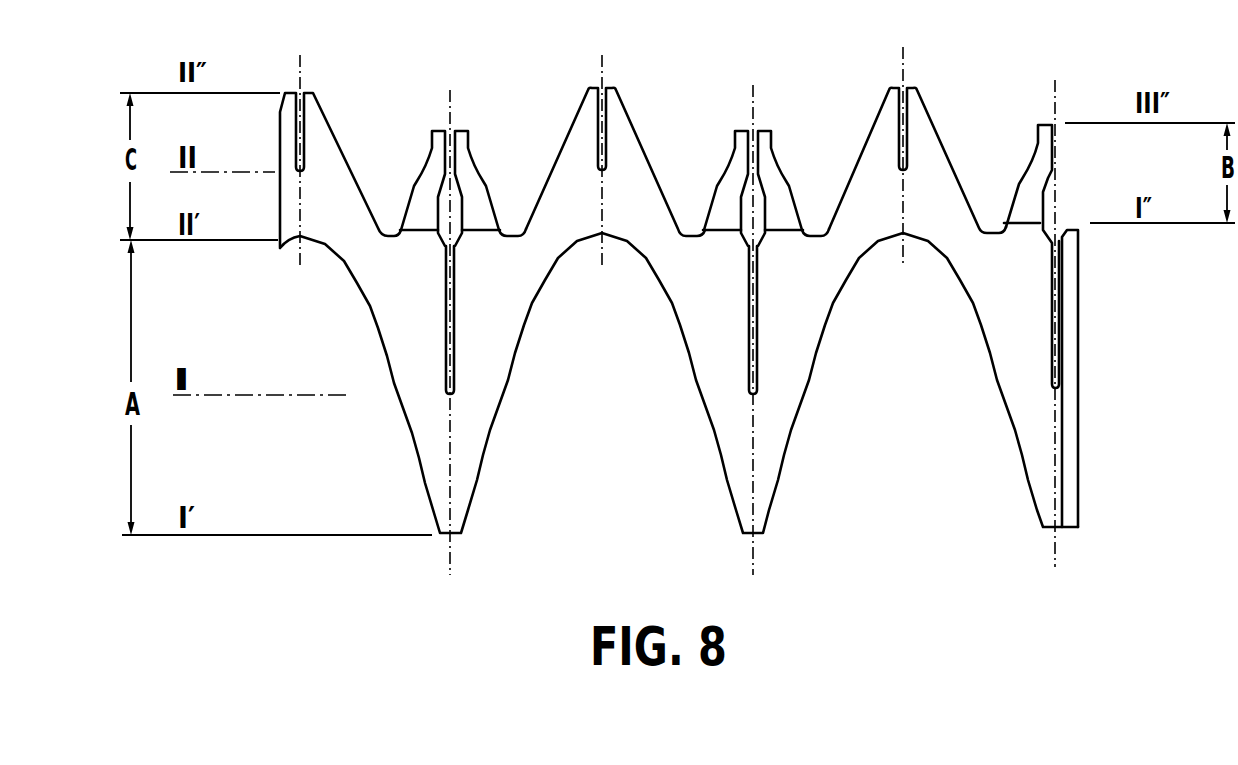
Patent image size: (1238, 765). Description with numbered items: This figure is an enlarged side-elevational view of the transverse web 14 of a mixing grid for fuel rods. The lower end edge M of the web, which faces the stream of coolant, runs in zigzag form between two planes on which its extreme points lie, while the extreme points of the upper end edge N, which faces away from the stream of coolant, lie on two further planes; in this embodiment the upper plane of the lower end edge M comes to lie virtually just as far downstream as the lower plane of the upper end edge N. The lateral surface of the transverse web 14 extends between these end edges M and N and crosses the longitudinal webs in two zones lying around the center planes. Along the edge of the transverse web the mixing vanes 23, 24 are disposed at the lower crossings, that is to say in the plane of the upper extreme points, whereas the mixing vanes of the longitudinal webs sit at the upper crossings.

The transverse web 14 is at (1068, 452).
The mixing vane 23 is at (1027, 192).
The mixing vane 24 is at (780, 202).
The upper end edge N is at (657, 180).
The lower end edge M is at (470, 515).